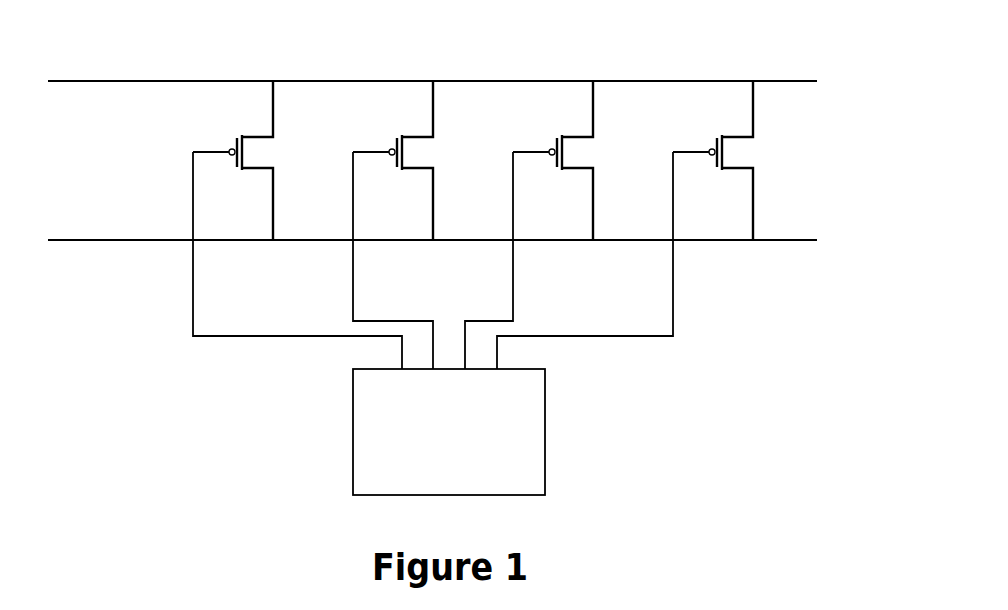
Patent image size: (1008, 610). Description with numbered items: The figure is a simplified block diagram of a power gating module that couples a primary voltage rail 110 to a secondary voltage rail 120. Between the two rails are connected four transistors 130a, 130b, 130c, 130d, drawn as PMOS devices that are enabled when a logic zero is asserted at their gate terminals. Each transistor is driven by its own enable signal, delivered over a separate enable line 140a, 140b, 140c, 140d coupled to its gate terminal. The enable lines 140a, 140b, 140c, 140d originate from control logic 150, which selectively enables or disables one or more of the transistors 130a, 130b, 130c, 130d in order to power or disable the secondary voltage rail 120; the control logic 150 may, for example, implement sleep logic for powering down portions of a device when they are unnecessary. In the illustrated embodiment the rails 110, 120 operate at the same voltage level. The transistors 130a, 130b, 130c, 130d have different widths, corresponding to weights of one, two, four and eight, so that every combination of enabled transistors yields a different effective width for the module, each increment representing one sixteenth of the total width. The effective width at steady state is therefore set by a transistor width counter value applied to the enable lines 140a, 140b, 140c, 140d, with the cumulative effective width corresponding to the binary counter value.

The primary voltage rail 110 is at (103, 81).
The secondary voltage rail 120 is at (105, 240).
The transistor 130a is at (740, 135).
The transistor 130b is at (580, 135).
The transistor 130c is at (420, 135).
The transistor 130d is at (260, 135).
The enable line 140a is at (678, 167).
The enable line 140b is at (518, 167).
The enable line 140c is at (358, 167).
The enable line 140d is at (198, 167).
The control logic 150 is at (470, 458).